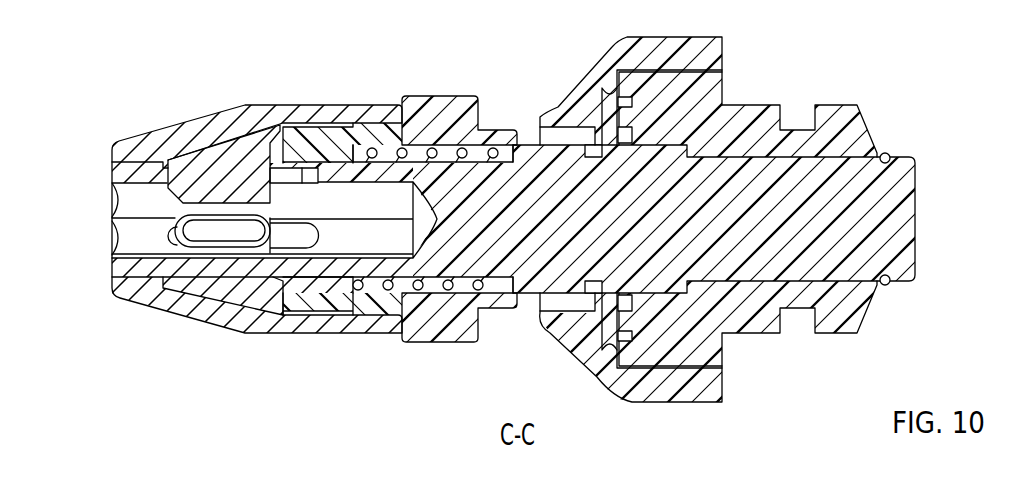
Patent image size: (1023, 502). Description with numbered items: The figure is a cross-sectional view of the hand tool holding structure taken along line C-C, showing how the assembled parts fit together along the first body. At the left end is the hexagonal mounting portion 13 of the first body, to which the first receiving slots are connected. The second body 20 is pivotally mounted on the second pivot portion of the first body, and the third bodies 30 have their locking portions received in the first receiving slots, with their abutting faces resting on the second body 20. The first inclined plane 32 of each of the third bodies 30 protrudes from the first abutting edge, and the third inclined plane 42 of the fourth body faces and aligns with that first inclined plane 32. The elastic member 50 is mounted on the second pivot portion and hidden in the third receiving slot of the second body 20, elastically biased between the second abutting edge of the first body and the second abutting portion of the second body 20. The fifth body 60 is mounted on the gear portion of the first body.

The mounting portion 13 is at (118, 203).
The second body 20 is at (443, 96).
The third bodies 30 is at (197, 243).
The first inclined plane 32 is at (197, 152).
The third inclined plane 42 is at (250, 128).
The elastic member 50 is at (452, 286).
The fifth body 60 is at (617, 50).